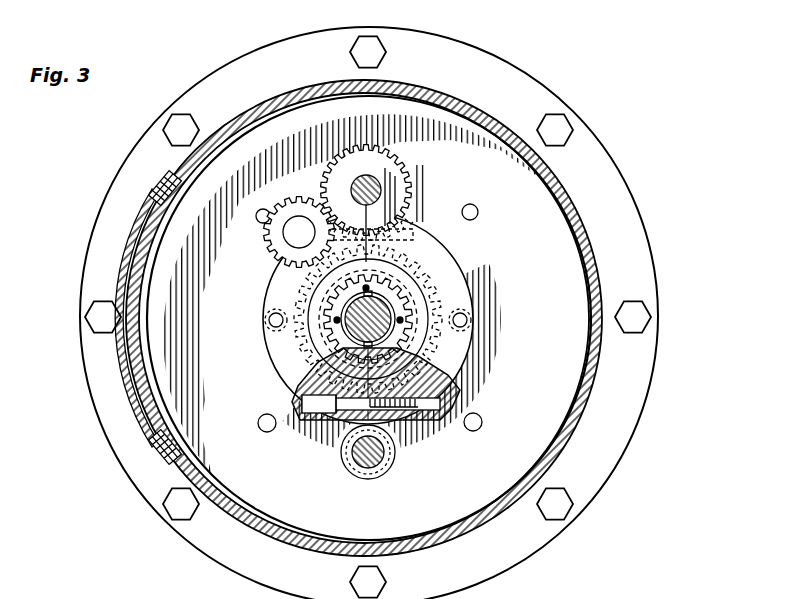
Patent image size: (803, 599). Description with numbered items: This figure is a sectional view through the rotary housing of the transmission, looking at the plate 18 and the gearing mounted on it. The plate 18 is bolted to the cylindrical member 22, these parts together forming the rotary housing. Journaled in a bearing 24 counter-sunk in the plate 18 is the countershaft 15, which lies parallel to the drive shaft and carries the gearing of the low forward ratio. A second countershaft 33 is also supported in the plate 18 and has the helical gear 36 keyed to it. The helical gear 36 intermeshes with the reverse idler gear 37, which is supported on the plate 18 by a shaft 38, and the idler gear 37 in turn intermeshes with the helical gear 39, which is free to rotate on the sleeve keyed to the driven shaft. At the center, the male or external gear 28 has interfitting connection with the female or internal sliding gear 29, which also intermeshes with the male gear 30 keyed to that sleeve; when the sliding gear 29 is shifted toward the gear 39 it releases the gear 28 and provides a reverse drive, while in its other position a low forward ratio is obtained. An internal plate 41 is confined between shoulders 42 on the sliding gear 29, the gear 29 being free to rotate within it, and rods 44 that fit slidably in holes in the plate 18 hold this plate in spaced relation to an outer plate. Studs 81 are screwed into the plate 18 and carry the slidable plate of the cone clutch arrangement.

The countershaft 15 is at (340, 452).
The plate 18 is at (562, 380).
The cylindrical member 22 is at (578, 418).
The bearing 24 is at (380, 462).
The male or external gear 28 is at (405, 325).
The female or internal sliding gear 29 is at (400, 358).
The male gear 30 is at (345, 350).
The countershaft 33 is at (382, 189).
The helical gear 36 is at (397, 177).
The reverse idler gear 37 is at (288, 238).
The shaft 38 is at (298, 244).
The helical gear 39 is at (455, 243).
The internal plate 41 is at (430, 275).
The shoulders 42 is at (450, 290).
The rods 44 is at (468, 318).
The studs 81 is at (257, 221).